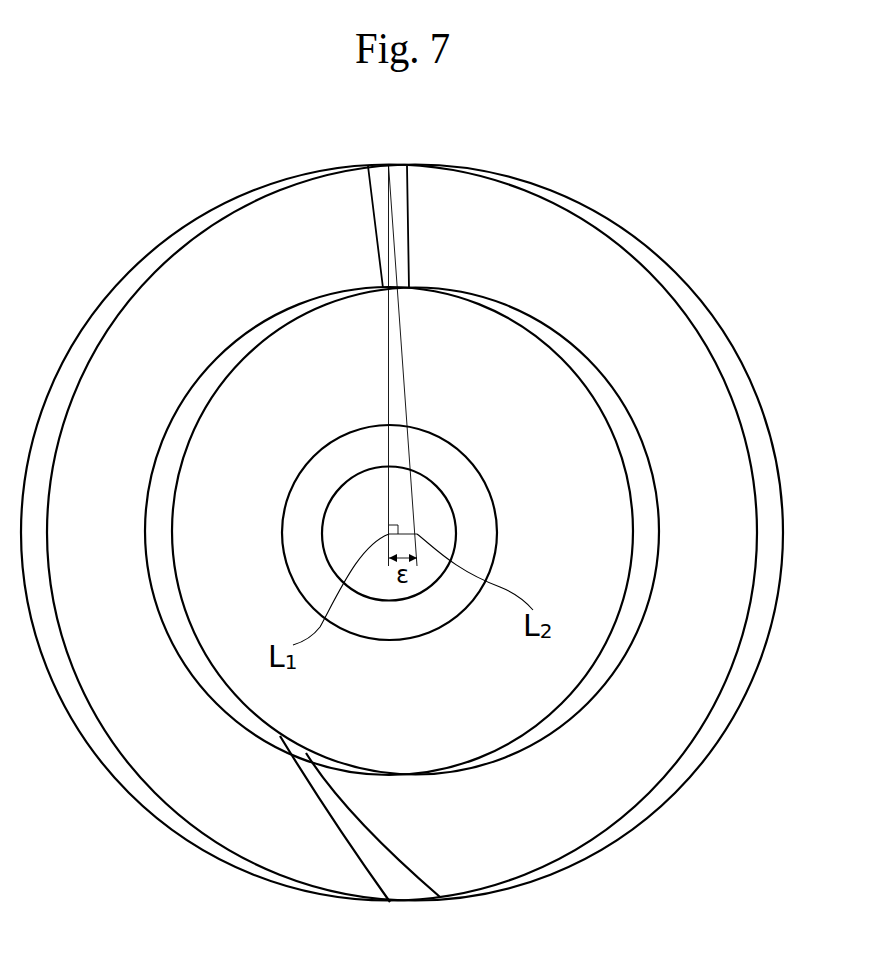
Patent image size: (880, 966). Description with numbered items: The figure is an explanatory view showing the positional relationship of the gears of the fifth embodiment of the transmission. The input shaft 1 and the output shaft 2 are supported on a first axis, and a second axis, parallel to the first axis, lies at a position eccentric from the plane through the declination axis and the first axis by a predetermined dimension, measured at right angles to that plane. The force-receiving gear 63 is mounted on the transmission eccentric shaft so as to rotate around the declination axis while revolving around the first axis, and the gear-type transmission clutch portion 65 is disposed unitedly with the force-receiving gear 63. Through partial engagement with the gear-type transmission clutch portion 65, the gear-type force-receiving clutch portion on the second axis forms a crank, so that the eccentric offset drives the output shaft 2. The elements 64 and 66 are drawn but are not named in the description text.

The input shaft 1 is at (457, 527).
The output shaft 2 is at (397, 643).
The force-receiving gear 63 is at (633, 503).
The rotor member 64 is at (608, 685).
The gear-type transmission clutch portion 65 is at (683, 304).
The outer ring 66 is at (738, 350).